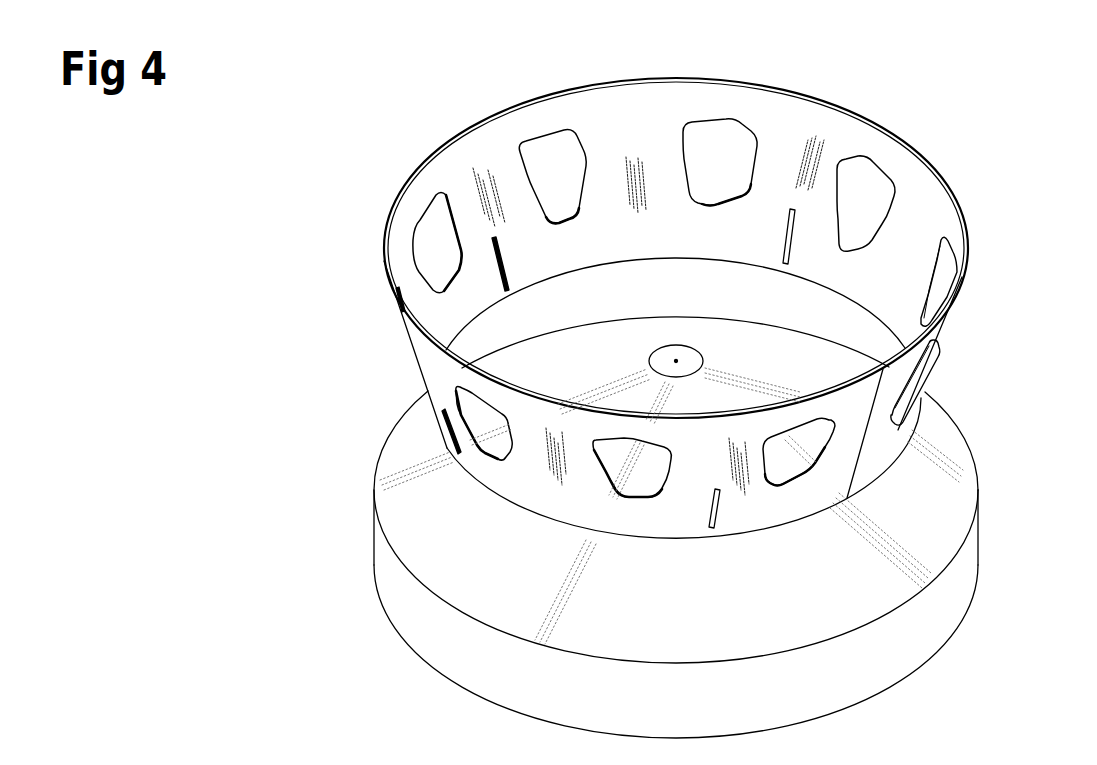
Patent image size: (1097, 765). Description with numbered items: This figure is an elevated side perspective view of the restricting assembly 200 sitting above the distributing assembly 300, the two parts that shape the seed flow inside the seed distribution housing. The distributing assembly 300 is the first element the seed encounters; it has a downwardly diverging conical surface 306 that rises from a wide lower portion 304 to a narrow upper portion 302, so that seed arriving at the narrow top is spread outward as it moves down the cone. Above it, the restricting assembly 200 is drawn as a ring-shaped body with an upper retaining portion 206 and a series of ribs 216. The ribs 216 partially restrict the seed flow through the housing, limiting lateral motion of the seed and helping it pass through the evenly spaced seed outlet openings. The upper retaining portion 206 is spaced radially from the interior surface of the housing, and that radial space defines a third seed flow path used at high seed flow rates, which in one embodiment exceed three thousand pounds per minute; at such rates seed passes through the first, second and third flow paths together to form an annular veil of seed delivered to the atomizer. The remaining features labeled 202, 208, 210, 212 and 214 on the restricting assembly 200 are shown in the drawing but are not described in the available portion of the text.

The restricting assembly 200 is at (376, 181).
The side wall of band 202 is at (1003, 200).
The upper retaining portion 206 is at (768, 205).
The lower band section 208 is at (768, 205).
The slit 210 is at (774, 166).
The top rim 212 is at (529, 100).
The inner surface 214 is at (578, 272).
The ribs 216 is at (634, 160).
The distributing assembly 300 is at (352, 494).
The narrow upper portion 302 is at (718, 352).
The wide lower portion 304 is at (950, 398).
The downwardly diverging conical surface 306 is at (727, 600).